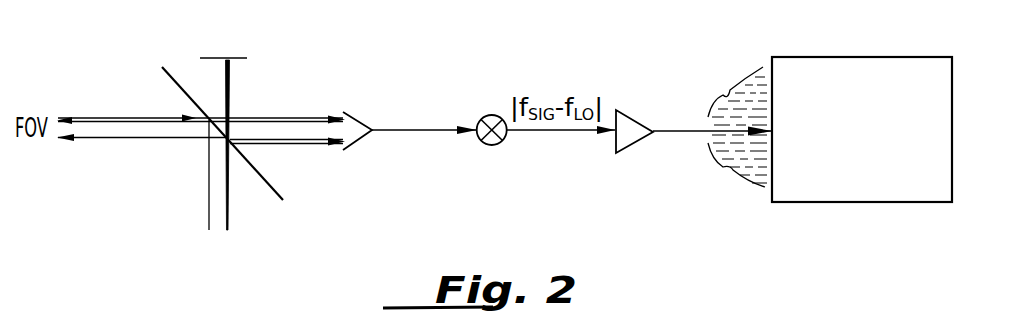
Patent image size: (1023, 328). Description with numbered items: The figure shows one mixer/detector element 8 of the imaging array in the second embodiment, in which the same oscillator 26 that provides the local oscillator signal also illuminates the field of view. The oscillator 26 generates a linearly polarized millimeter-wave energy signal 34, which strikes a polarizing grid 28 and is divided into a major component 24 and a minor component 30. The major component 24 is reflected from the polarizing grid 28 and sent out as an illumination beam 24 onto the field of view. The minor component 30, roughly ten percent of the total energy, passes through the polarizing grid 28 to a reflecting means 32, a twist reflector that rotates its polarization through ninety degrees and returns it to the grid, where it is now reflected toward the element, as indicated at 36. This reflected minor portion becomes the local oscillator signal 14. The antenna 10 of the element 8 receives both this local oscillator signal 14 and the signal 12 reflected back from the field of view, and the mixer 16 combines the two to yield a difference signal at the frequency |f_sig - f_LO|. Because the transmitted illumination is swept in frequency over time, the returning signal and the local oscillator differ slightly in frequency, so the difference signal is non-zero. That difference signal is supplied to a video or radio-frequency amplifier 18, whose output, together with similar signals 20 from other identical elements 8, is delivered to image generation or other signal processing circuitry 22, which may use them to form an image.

The mixer/detector element 8 is at (461, 156).
The antenna 10 is at (365, 118).
The signal from the field of view 12 is at (113, 117).
The local oscillator signal 14 is at (302, 147).
The mixer 16 is at (487, 115).
The video or radio-frequency amplifier 18 is at (630, 118).
The similar signals 20 is at (737, 130).
The image generation or other signal processing circuitry 22 is at (943, 150).
The illumination beam 24 is at (141, 133).
The oscillator 26 is at (273, 247).
The polarizing grid 28 is at (167, 72).
The minor component 30 is at (222, 85).
The reflecting means 32 is at (240, 58).
The millimeter-wave energy signal 34 is at (213, 193).
The reflection of minor portion from polarizing grid 36 is at (250, 153).